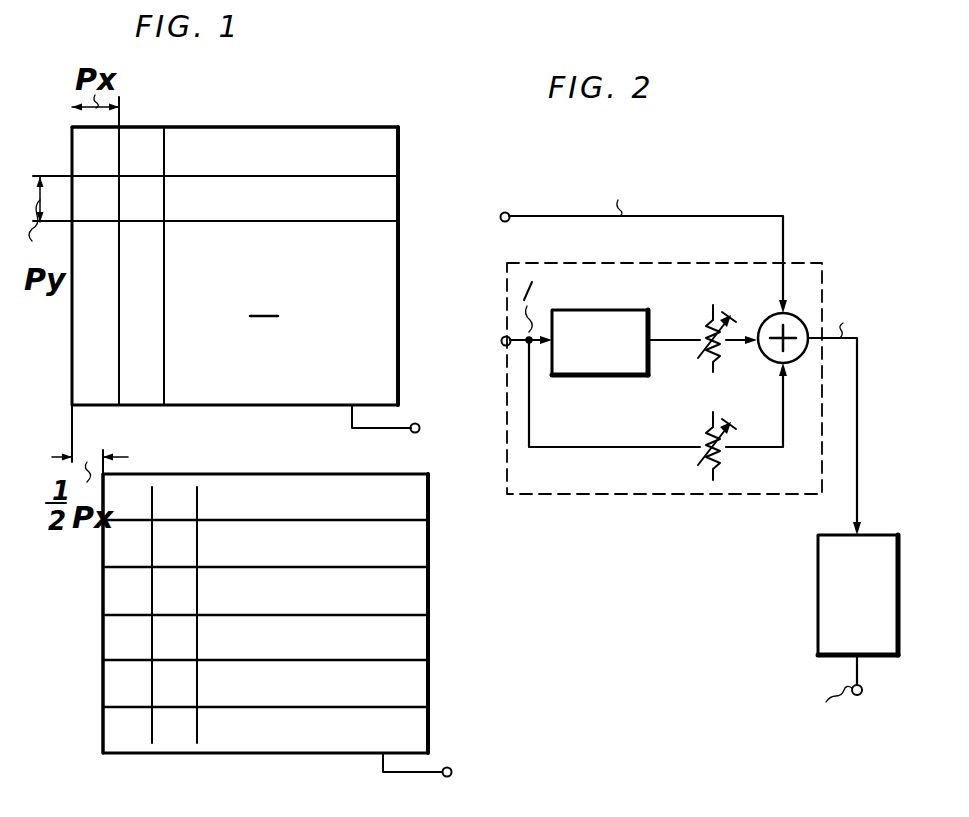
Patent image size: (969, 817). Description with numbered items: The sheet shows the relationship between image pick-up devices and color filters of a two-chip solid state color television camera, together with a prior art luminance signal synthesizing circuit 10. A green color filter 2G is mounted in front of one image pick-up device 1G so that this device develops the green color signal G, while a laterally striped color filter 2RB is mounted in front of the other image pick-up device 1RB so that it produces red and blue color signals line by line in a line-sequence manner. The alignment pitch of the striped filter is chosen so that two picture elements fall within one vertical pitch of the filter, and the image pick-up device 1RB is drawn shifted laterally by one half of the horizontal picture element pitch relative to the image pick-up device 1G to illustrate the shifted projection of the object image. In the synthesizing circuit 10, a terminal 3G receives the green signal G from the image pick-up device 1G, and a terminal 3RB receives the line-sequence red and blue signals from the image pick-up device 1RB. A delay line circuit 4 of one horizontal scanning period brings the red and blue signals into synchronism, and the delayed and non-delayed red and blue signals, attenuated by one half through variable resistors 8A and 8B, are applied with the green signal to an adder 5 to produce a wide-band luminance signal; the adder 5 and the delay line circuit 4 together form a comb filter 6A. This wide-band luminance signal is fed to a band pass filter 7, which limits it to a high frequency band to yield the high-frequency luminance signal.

In FIG. 1, the image pick-up device 1G is at (266, 103).
In FIG. 1, the green color filter 2G is at (399, 140).
In FIG. 1, the terminal 3G is at (418, 423).
In FIG. 2, the terminal 3G is at (507, 212).
In FIG. 1, the image pick-up device 1RB is at (505, 613).
In FIG. 1, the laterally striped color filter 2RB is at (103, 678).
In FIG. 1, the terminal 3RB is at (450, 768).
In FIG. 2, the terminal 3RB is at (501, 338).
In FIG. 2, the luminance signal synthesizing circuit 10 is at (712, 168).
In FIG. 2, the delay line circuit 4 is at (625, 378).
In FIG. 2, the adder 5 is at (804, 322).
In FIG. 2, the comb filter 6A is at (666, 494).
In FIG. 2, the band pass filter 7 is at (818, 600).
In FIG. 2, the variable resistor 8A is at (700, 340).
In FIG. 2, the variable resistor 8B is at (700, 447).